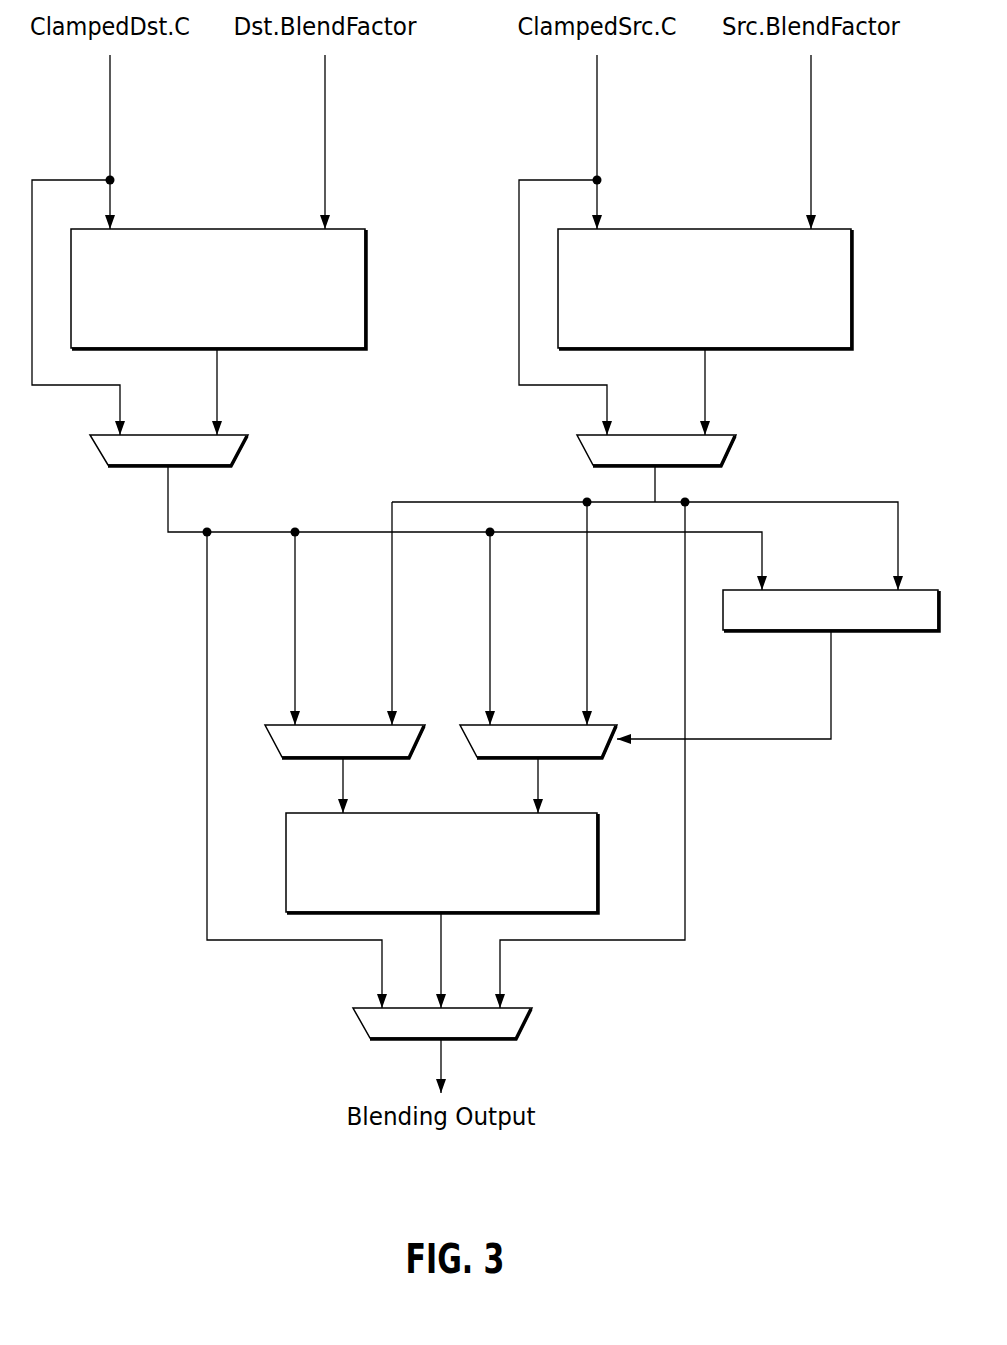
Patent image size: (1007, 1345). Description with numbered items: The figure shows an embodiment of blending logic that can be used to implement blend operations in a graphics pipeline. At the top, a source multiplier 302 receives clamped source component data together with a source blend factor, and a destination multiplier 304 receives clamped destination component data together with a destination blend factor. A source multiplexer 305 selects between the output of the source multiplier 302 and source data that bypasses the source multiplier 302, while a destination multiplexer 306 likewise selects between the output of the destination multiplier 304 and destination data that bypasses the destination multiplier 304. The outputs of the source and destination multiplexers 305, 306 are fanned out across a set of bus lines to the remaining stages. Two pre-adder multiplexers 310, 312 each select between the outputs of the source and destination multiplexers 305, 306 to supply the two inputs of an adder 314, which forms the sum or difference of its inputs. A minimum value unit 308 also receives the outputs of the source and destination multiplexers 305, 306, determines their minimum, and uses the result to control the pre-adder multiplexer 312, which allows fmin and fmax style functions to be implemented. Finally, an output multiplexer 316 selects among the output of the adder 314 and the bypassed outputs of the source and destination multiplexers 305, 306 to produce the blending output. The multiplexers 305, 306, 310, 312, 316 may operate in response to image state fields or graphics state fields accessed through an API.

The source multiplier 302 is at (685, 330).
The destination multiplier 304 is at (197, 330).
The source multiplexer 305 is at (737, 448).
The destination multiplexer 306 is at (249, 448).
The minimum value unit 308 is at (866, 632).
The pre-adder multiplexer 310 is at (288, 759).
The pre-adder multiplexer 312 is at (596, 759).
The adder 314 is at (421, 900).
The output multiplexer 316 is at (533, 1028).